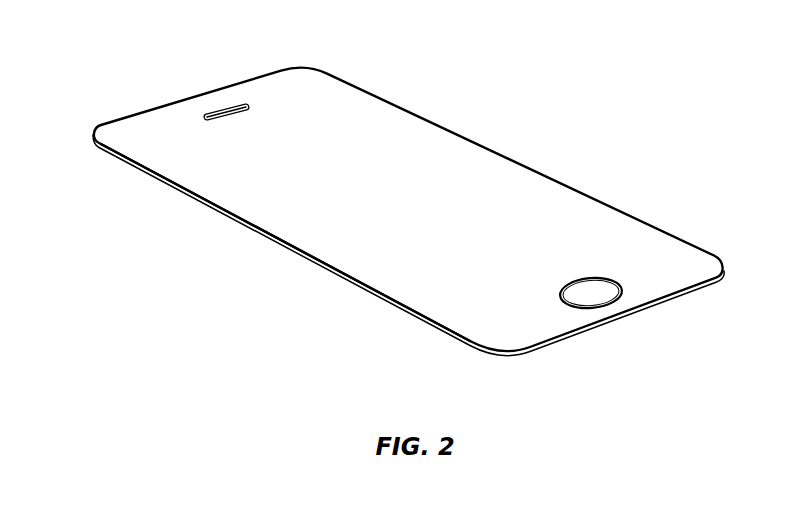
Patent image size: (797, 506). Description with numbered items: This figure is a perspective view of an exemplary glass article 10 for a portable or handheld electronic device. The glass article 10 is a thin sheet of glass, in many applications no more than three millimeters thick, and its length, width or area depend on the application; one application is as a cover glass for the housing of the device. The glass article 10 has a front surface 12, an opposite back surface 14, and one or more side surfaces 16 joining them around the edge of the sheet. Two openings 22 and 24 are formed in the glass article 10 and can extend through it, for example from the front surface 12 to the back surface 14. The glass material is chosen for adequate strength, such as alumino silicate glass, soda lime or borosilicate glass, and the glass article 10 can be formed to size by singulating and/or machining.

The glass article 10 is at (104, 18).
The front surface 12 is at (463, 160).
The back surface 14 is at (426, 326).
The side surface 16 is at (288, 244).
The opening 22 is at (221, 107).
The opening 24 is at (584, 308).